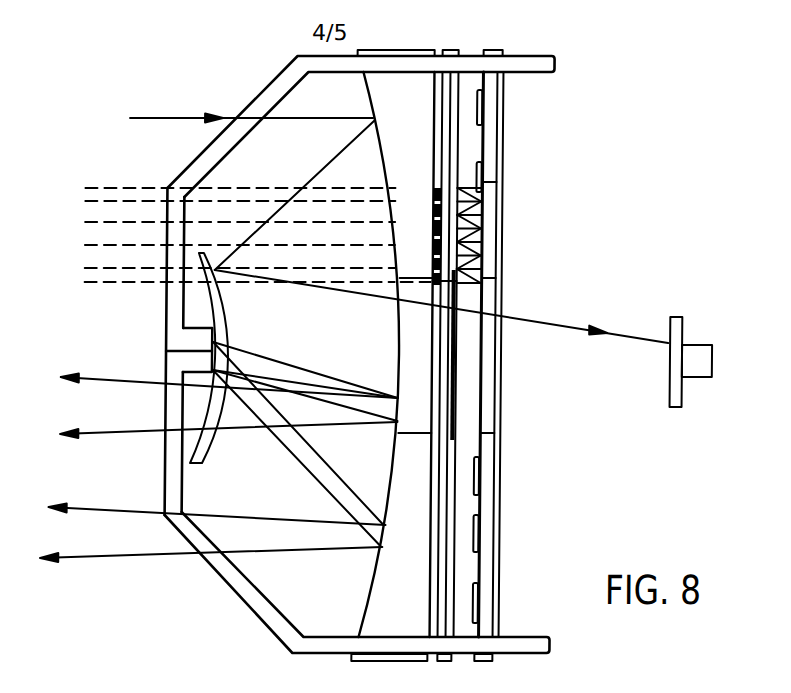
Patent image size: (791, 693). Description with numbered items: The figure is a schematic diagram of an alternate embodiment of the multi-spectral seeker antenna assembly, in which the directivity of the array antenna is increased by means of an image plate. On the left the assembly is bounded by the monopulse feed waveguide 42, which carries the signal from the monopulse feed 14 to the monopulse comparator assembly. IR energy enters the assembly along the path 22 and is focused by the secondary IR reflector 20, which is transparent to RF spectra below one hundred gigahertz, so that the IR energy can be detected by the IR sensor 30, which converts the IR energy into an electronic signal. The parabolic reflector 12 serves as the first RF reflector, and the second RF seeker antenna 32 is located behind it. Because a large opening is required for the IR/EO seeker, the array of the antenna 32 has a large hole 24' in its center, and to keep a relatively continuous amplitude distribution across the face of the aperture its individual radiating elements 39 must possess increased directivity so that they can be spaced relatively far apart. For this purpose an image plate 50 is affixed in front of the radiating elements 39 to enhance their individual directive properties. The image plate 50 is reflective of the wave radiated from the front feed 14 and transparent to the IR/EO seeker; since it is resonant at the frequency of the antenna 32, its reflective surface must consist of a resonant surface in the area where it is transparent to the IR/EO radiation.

The parabolic reflector 12 is at (397, 458).
The monopulse feed 14 is at (174, 335).
The secondary IR reflector 20 is at (229, 318).
The path 22 is at (225, 117).
The hole 24' is at (386, 355).
The IR sensor 30 is at (691, 343).
The second RF seeker antenna 32 is at (496, 118).
The radiating elements 39 is at (480, 170).
The monopulse feed waveguide 42 is at (196, 165).
The image plate 50 is at (450, 85).